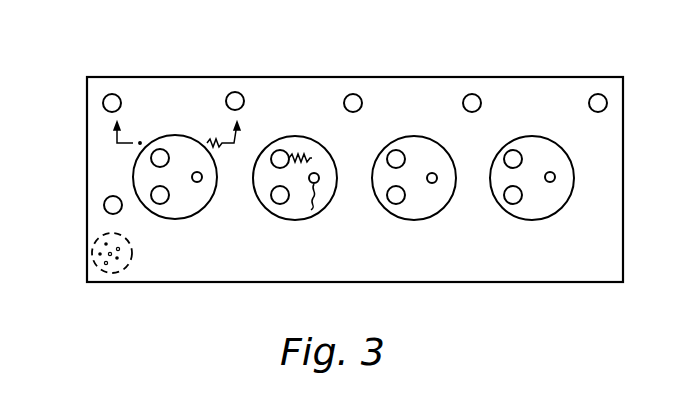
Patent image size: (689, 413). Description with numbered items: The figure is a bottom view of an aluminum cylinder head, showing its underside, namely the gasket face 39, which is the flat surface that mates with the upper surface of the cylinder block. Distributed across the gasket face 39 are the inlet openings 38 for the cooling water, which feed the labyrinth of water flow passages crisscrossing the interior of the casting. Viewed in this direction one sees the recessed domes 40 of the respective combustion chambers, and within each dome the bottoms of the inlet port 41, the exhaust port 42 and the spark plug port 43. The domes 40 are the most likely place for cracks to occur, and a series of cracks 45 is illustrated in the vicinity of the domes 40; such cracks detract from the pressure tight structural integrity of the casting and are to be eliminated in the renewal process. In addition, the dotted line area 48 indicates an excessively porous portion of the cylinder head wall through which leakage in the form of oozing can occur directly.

The inlet openings 38 is at (112, 101).
The gasket face 39 is at (245, 260).
The recessed domes 40 is at (427, 219).
The inlet port 41 is at (515, 196).
The exhaust port 42 is at (515, 160).
The spark plug port 43 is at (552, 179).
The cracks 45 is at (207, 143).
The dotted line area 48 is at (92, 262).